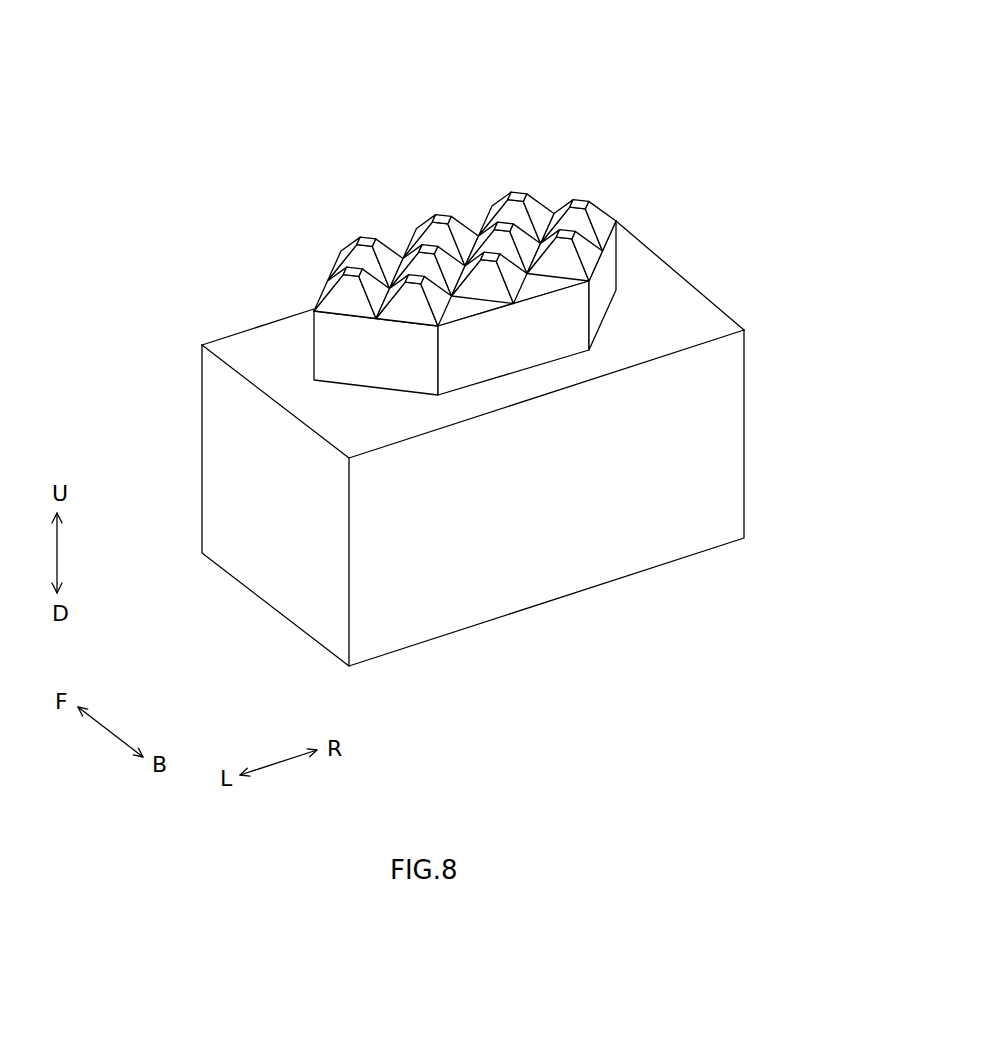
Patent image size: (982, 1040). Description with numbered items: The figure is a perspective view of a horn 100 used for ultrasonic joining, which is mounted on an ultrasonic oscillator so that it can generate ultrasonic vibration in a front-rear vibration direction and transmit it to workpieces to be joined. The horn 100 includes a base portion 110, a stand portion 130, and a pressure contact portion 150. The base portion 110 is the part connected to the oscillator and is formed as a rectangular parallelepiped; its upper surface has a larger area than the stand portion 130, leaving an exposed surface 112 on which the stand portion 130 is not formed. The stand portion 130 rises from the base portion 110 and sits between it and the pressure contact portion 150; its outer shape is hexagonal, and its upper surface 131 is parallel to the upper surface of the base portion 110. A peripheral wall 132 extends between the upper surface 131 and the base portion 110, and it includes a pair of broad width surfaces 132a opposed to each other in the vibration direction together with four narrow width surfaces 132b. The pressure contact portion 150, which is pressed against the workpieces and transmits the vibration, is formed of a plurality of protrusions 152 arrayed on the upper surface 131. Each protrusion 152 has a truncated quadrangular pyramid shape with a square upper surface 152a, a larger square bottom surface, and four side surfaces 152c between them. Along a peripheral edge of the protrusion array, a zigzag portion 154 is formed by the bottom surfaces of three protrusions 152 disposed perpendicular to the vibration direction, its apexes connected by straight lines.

The horn 100 is at (211, 90).
The base portion 110 is at (198, 426).
The exposed surface 112 is at (677, 297).
The stand portion 130 is at (412, 425).
The upper surface of stand portion 131 is at (398, 238).
The peripheral wall 132 is at (485, 473).
The broad width surface 132a is at (523, 348).
The narrow width surface 132b is at (410, 373).
The pressure contact portion 150 is at (452, 206).
The protrusion 152 is at (532, 176).
The upper surface of protrusion 152a is at (519, 192).
The side surface of protrusion 152c is at (542, 206).
The zigzag portion 154 is at (482, 268).